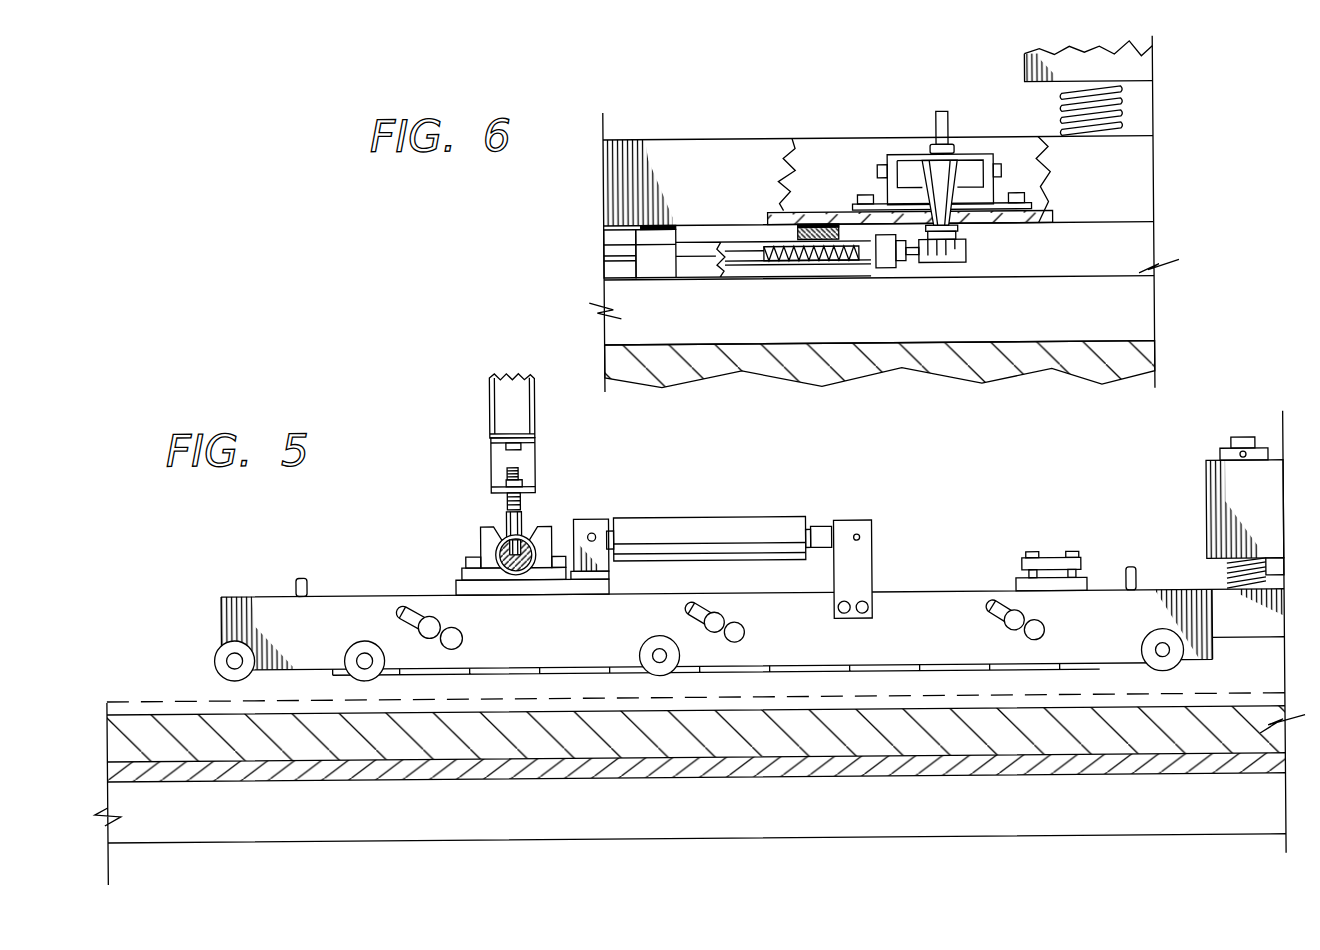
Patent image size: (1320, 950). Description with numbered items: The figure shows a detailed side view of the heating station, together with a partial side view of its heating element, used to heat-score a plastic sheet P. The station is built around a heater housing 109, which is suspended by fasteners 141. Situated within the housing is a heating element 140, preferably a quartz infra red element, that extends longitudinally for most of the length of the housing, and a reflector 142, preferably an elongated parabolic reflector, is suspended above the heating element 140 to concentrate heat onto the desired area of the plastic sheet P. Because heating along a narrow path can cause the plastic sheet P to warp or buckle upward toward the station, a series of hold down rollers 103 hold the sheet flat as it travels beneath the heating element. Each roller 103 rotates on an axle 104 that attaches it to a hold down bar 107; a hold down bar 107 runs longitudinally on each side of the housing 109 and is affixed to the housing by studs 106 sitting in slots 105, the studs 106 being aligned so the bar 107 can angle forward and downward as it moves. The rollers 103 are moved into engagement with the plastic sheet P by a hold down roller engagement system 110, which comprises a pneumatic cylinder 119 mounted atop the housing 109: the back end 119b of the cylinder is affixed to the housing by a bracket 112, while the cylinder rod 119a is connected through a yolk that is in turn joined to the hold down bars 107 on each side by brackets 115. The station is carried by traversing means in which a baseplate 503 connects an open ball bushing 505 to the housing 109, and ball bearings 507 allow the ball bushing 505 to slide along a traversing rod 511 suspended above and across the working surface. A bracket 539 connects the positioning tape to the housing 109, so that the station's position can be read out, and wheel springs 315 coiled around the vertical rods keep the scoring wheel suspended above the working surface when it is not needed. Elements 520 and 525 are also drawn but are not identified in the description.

In FIG. 5, the plastic sheet P is at (127, 701).
In FIG. 5, the hold down rollers 103 is at (226, 677).
In FIG. 5, the axle 104 is at (655, 658).
In FIG. 5, the slots 105 is at (397, 613).
In FIG. 5, the studs 106 is at (448, 626).
In FIG. 5, the hold down bar 107 is at (268, 612).
In FIG. 5, the heater housing 109 is at (1255, 638).
In FIG. 6, the heater housing 109 is at (720, 153).
In FIG. 5, the hold down roller engagement system 110 is at (692, 476).
In FIG. 5, the bracket 112 is at (598, 530).
In FIG. 5, the brackets 115 is at (853, 525).
In FIG. 5, the pneumatic cylinder 119 is at (723, 528).
In FIG. 5, the cylinder rod 119a is at (811, 526).
In FIG. 5, the back end 119b is at (596, 546).
In FIG. 6, the heating element 140 is at (916, 268).
In FIG. 6, the fasteners 141 is at (914, 158).
In FIG. 6, the reflector 142 is at (700, 264).
In FIG. 6, the wheel springs 315 is at (1060, 130).
In FIG. 5, the baseplate 503 is at (460, 592).
In FIG. 5, the open ball bushing 505 is at (488, 536).
In FIG. 5, the ball bearings 507 is at (548, 540).
In FIG. 5, the traversing rod 511 is at (500, 556).
In FIG. 5, the cylinder 520 is at (492, 406).
In FIG. 5, the coupling housing 525 is at (533, 461).
In FIG. 5, the bracket 539 is at (1053, 566).